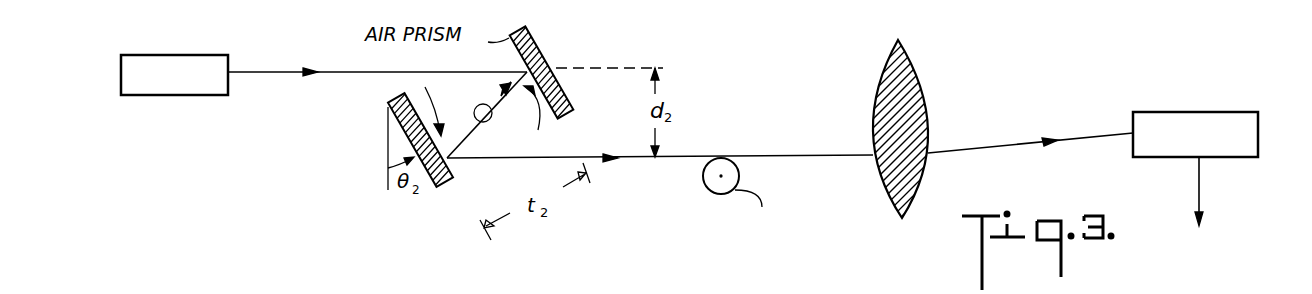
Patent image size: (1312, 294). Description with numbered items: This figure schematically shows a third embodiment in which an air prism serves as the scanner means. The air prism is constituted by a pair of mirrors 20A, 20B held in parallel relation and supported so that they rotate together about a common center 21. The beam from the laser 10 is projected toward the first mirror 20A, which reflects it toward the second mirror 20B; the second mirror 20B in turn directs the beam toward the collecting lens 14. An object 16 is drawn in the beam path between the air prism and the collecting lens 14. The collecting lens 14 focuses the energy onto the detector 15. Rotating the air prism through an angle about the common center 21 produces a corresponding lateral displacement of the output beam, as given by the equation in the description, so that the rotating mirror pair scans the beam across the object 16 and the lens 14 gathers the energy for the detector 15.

The laser 10 is at (228, 55).
The mirror 20A is at (524, 28).
The mirror 20B is at (453, 180).
The common center 21 is at (489, 120).
The object 16 is at (740, 175).
The collecting lens 14 is at (922, 90).
The detector 15 is at (1260, 112).